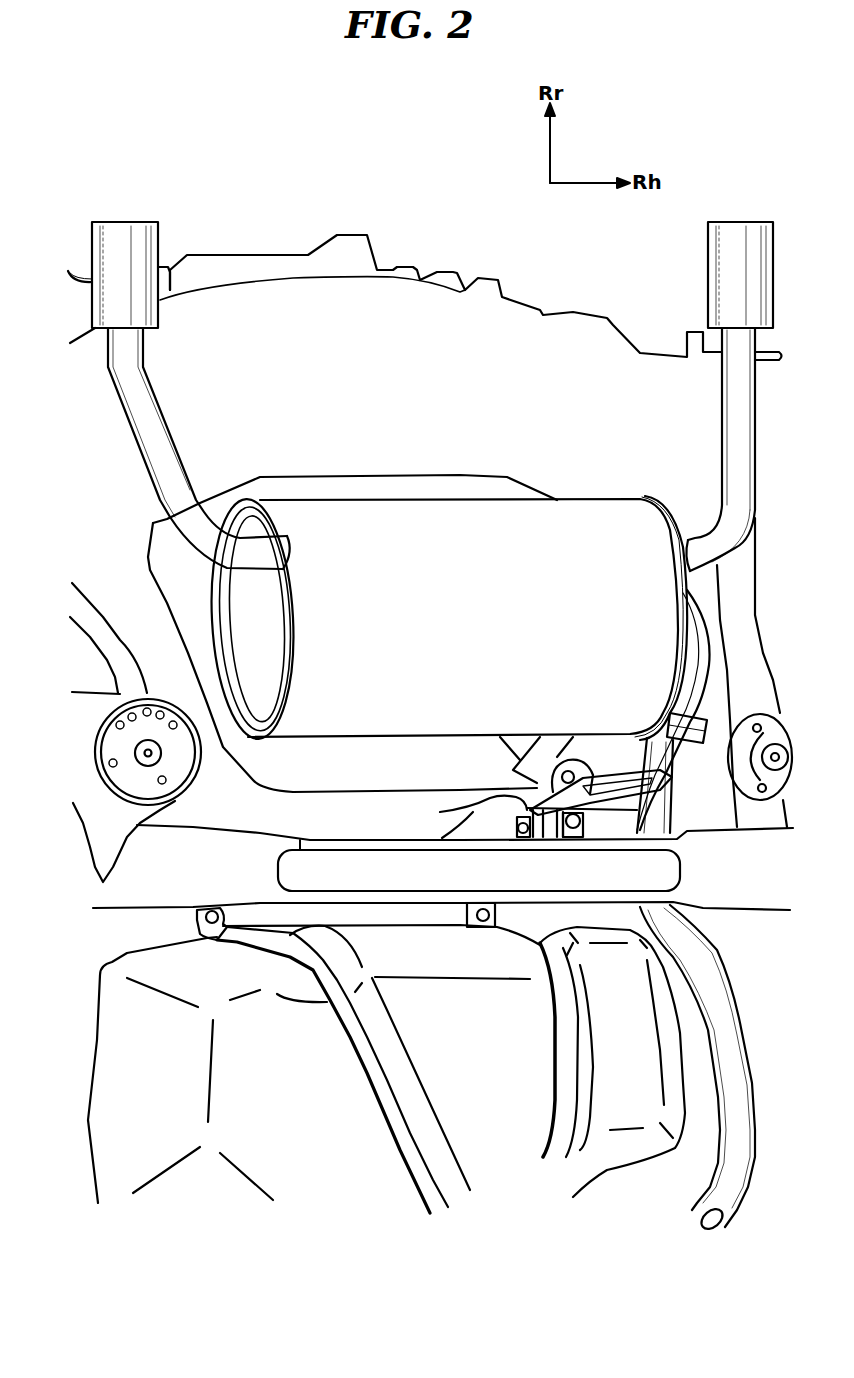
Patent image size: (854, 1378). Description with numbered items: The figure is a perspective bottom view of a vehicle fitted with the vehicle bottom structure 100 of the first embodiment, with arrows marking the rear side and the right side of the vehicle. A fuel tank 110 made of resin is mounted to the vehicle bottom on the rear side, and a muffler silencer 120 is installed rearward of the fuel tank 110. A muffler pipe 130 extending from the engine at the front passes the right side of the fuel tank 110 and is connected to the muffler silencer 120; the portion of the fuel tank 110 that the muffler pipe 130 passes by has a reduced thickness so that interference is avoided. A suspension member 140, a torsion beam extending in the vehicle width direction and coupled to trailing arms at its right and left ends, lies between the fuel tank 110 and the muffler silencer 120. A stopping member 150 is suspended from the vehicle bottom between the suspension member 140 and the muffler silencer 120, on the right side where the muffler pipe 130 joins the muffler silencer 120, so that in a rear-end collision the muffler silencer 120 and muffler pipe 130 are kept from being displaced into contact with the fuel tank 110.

The vehicle bottom structure 100 is at (168, 150).
The fuel tank 110 is at (110, 1027).
The muffler silencer 120 is at (606, 506).
The muffler pipe 130 is at (720, 997).
The suspension member 140 is at (330, 864).
The stopping member 150 is at (498, 800).